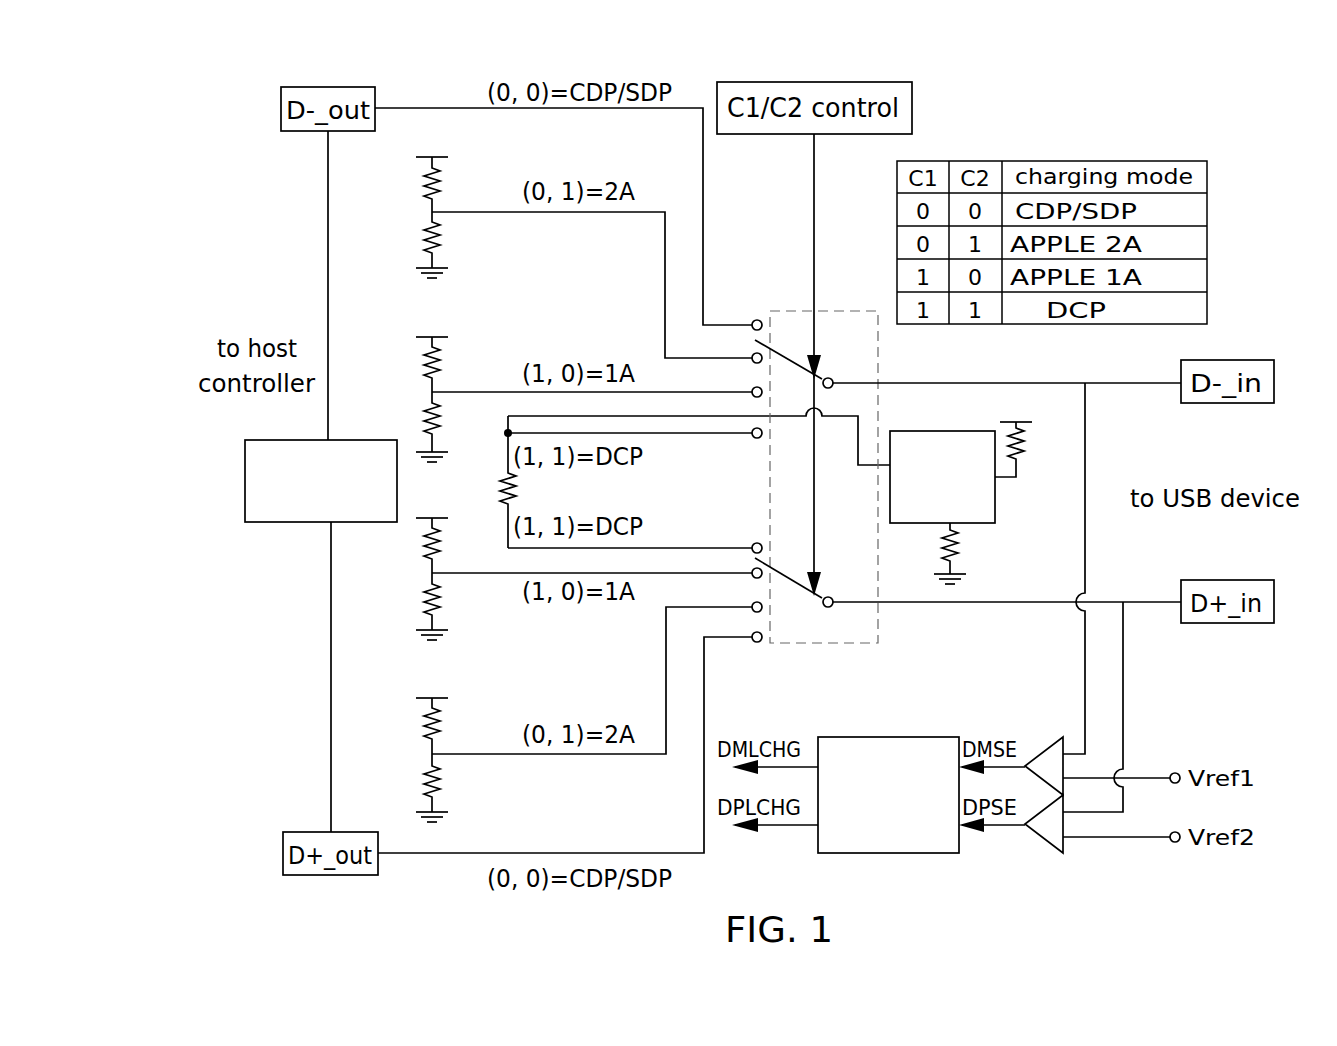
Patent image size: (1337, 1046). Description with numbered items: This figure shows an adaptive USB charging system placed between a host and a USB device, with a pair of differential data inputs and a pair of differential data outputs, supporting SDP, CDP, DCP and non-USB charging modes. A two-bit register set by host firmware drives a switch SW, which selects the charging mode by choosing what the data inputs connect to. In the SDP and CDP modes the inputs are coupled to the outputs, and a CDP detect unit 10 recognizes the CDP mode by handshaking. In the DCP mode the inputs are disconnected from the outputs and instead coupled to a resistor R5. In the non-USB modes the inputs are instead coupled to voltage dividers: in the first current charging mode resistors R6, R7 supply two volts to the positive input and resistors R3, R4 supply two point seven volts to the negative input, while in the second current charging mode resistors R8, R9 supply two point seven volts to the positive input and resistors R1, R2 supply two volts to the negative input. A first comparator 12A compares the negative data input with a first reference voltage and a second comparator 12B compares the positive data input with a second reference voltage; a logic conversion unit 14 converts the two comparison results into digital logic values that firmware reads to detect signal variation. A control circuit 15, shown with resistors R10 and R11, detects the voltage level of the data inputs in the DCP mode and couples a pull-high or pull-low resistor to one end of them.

The CDP detect unit 10 is at (308, 522).
The first comparator 12A is at (1036, 748).
The second comparator 12B is at (1036, 842).
The logic conversion unit 14 is at (893, 737).
The control circuit 15 is at (995, 504).
The switch SW is at (815, 477).
The voltage divider resistor R1 is at (450, 171).
The voltage divider resistor R2 is at (450, 245).
The voltage divider resistor R3 is at (450, 351).
The voltage divider resistor R4 is at (450, 427).
The resistor R5 is at (490, 482).
The voltage divider resistor R6 is at (450, 531).
The voltage divider resistor R7 is at (450, 606).
The voltage divider resistor R8 is at (449, 713).
The voltage divider resistor R9 is at (449, 788).
The resistor R10 is at (1031, 435).
The resistor R11 is at (970, 553).